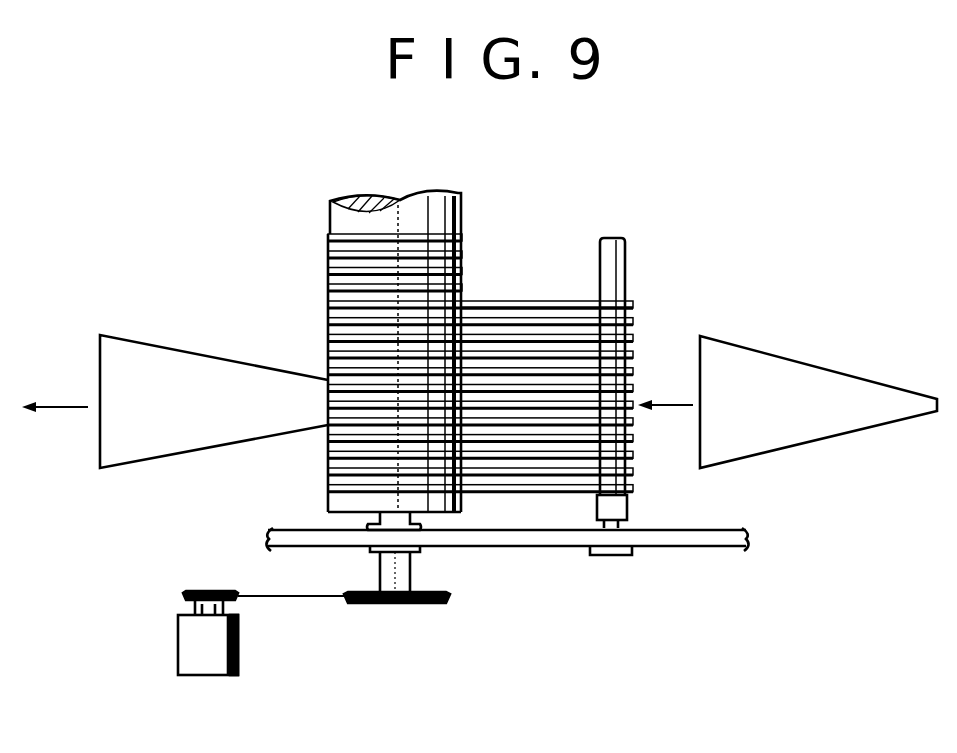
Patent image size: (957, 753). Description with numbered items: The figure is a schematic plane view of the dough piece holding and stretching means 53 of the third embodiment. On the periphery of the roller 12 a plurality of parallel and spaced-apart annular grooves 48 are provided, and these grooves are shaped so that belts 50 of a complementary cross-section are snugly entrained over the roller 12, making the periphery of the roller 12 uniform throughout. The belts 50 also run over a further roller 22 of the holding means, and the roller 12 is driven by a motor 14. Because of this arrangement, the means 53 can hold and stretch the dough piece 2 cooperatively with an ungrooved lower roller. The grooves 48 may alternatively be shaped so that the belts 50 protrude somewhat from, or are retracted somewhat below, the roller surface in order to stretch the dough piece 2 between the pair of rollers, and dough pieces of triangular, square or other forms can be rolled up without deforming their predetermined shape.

The dough piece 2 is at (227, 366).
The roller 12 is at (447, 194).
The motor 14 is at (238, 660).
The roller 22 is at (625, 262).
The annular grooves 48 is at (330, 236).
The belts 50 is at (530, 303).
The dough piece holding and stretching means 53 is at (566, 186).